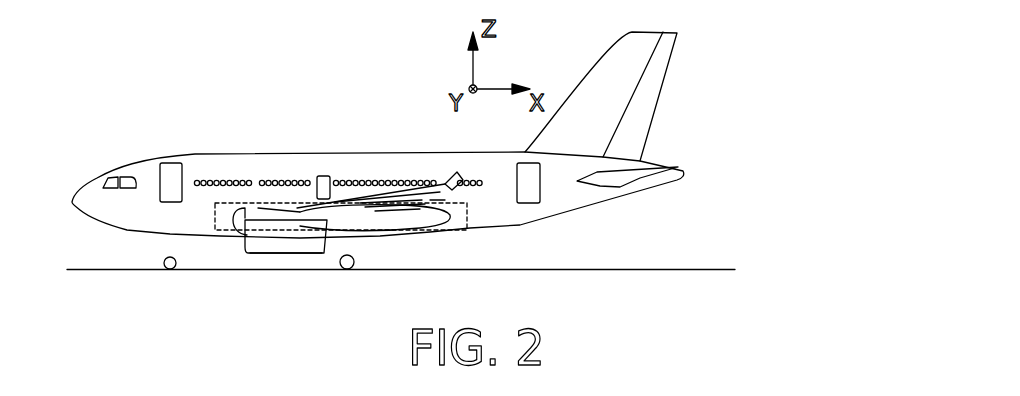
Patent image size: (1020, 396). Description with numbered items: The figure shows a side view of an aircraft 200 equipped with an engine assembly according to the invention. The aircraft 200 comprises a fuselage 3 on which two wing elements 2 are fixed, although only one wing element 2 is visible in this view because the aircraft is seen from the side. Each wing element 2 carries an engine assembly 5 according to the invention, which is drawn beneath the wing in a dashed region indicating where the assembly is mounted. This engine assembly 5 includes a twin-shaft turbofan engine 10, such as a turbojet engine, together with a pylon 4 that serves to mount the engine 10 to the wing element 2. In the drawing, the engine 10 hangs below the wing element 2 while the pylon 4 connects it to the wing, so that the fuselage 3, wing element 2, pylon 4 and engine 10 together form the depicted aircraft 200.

The aircraft 200 is at (306, 106).
The fuselage 3 is at (213, 168).
The wing element 2 is at (345, 207).
The pylon 4 is at (298, 210).
The engine assembly 5 is at (230, 258).
The twin-shaft turbofan engine 10 is at (289, 254).